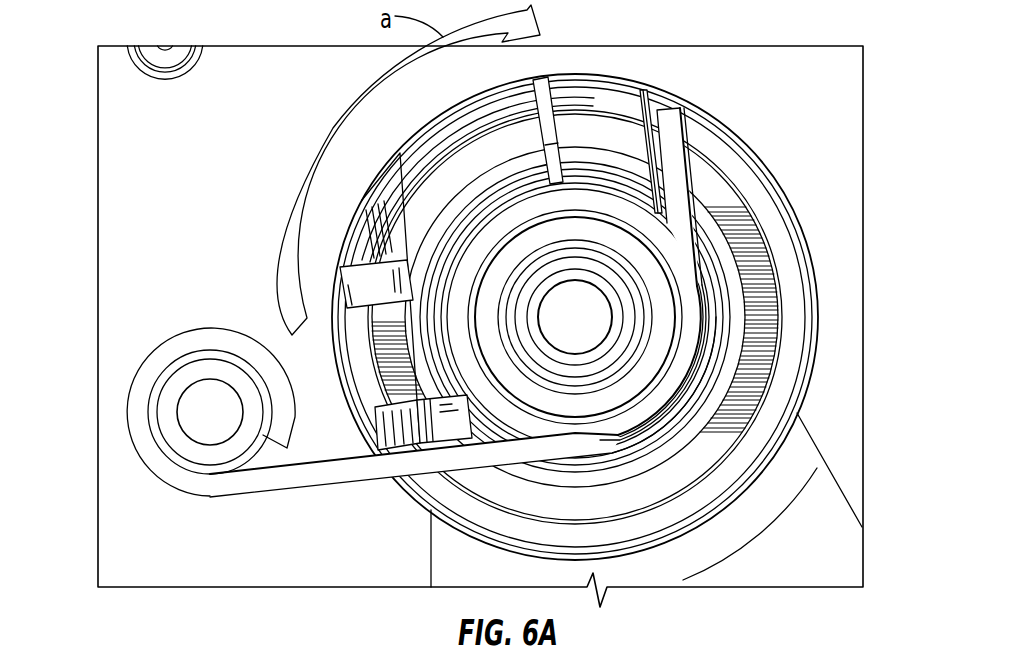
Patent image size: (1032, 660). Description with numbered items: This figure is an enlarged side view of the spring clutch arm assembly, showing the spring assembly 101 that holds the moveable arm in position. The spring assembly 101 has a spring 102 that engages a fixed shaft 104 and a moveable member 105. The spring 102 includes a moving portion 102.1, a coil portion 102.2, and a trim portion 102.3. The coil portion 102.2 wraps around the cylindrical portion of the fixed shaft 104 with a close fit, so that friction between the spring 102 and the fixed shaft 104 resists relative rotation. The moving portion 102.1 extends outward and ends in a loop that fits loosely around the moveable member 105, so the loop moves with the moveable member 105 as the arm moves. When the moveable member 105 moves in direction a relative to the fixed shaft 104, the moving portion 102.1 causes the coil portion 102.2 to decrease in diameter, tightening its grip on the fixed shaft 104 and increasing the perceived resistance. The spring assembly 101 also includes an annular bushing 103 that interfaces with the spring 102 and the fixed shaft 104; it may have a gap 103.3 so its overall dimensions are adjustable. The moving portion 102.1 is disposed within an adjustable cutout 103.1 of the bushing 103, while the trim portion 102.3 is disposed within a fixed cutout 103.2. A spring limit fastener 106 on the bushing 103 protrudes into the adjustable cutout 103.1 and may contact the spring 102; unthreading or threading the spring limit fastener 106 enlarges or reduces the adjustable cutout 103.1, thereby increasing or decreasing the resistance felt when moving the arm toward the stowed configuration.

The spring assembly 101 is at (812, 78).
The spring 102 is at (318, 477).
The moving portion 102.1 is at (133, 413).
The coil portion 102.2 is at (677, 392).
The trim portion 102.3 is at (673, 152).
The bushing 103 is at (765, 285).
The adjustable cutout 103.1 is at (448, 430).
The fixed cutout 103.2 is at (658, 102).
The gap 103.3 is at (543, 107).
The fixed shaft 104 is at (580, 228).
The moveable member 105 is at (212, 410).
The spring limit fastener 106 is at (362, 282).